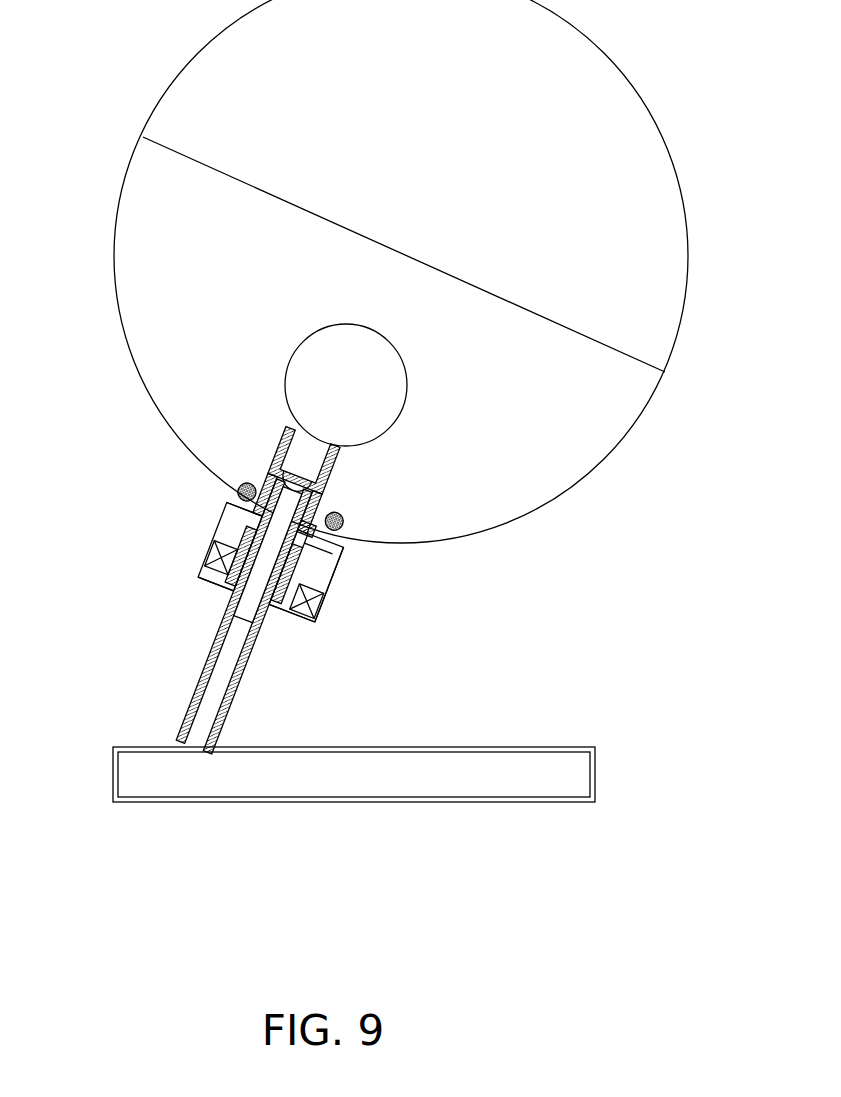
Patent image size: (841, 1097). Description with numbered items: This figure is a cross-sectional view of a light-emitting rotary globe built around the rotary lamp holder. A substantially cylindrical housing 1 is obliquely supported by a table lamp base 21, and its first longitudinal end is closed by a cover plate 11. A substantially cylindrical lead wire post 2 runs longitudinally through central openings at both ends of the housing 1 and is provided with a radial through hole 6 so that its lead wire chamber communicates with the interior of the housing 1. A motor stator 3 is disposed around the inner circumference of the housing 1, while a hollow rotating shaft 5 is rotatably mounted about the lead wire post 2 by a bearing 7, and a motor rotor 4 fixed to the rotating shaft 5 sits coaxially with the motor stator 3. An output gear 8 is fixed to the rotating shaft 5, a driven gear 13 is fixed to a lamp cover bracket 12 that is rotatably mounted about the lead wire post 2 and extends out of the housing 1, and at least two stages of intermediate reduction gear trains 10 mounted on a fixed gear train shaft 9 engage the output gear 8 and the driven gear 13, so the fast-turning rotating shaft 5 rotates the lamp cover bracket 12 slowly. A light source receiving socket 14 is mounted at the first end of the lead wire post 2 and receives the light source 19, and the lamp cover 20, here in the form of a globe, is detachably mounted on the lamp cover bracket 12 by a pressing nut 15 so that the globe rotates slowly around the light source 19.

The housing 1 is at (232, 505).
The lead wire post 2 is at (228, 507).
The motor stator 3 is at (217, 555).
The motor rotor 4 is at (205, 580).
The rotating shaft 5 is at (233, 588).
The radial through hole 6 is at (240, 590).
The bearing 7 is at (303, 625).
The output gear 8 is at (308, 620).
The gear train shaft 9 is at (335, 568).
The intermediate reduction gear trains 10 is at (338, 550).
The cover plate 11 is at (338, 538).
The lamp cover bracket 12 is at (313, 537).
The driven gear 13 is at (340, 527).
The light source receiving socket 14 is at (343, 478).
The pressing nut 15 is at (247, 490).
The light source 19 is at (360, 377).
The lamp cover 20 is at (153, 115).
The table lamp base 21 is at (530, 757).